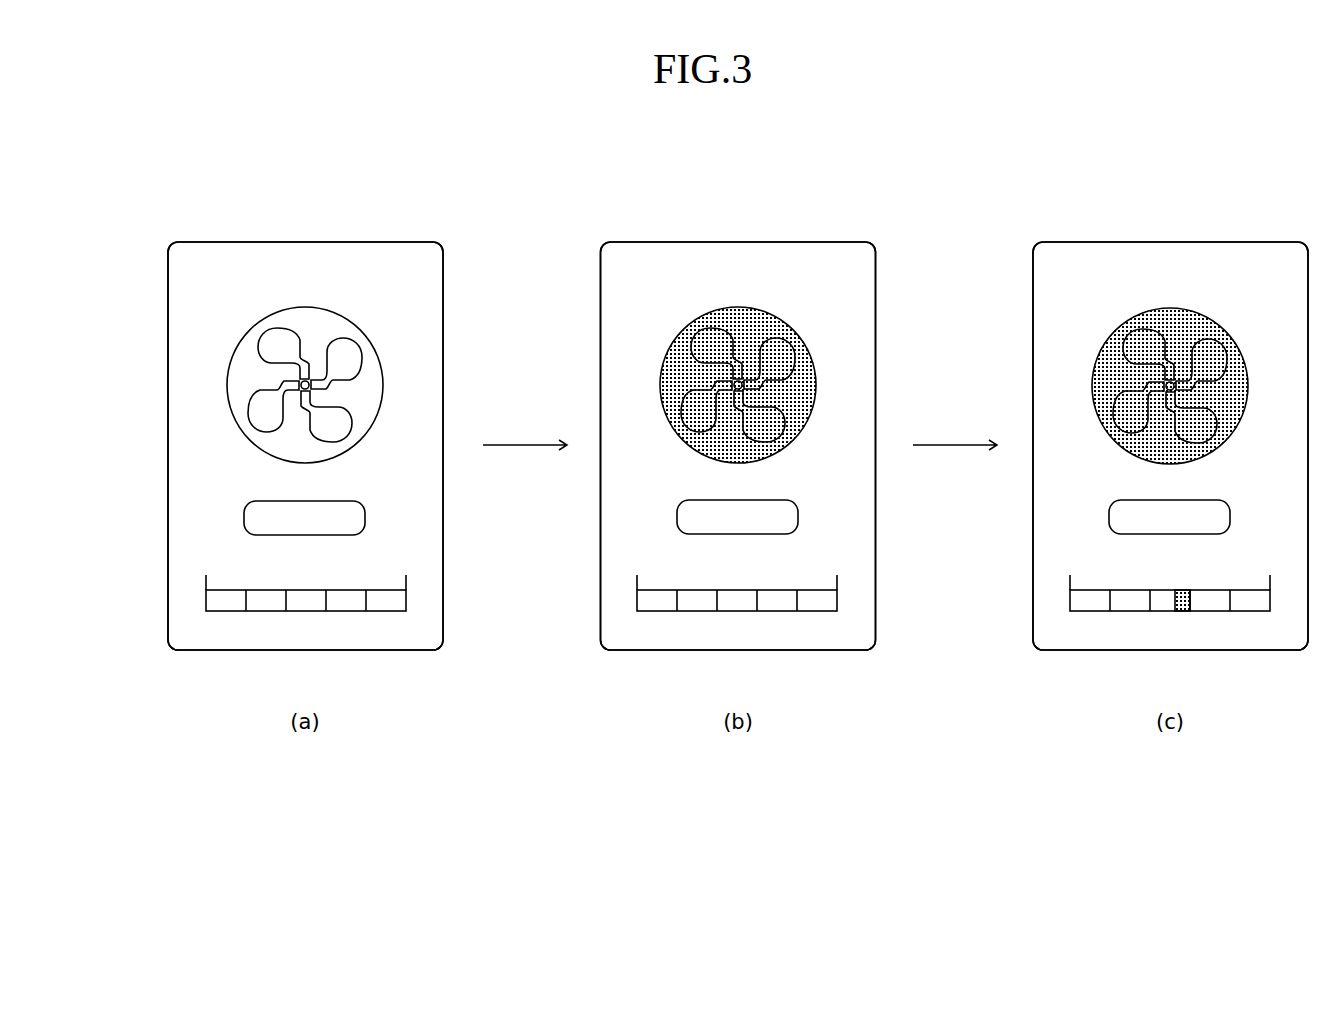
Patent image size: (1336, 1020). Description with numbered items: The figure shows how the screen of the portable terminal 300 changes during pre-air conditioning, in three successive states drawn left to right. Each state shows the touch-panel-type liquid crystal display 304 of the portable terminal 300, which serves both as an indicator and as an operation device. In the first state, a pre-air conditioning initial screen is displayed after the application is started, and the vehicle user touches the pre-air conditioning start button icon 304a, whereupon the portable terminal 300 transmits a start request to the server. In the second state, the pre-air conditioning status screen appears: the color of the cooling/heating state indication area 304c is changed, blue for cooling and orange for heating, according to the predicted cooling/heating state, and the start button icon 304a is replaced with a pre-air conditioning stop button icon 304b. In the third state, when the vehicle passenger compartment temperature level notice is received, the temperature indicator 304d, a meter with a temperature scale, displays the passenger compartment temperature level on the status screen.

The portable terminal 300 is at (203, 242).
The touch-panel-type liquid crystal display 304 is at (178, 302).
The pre-air conditioning start button icon 304a is at (244, 517).
The pre-air conditioning stop button icon 304b is at (677, 517).
The cooling/heating state indication area 304c is at (228, 372).
The temperature indicator 304d is at (207, 600).